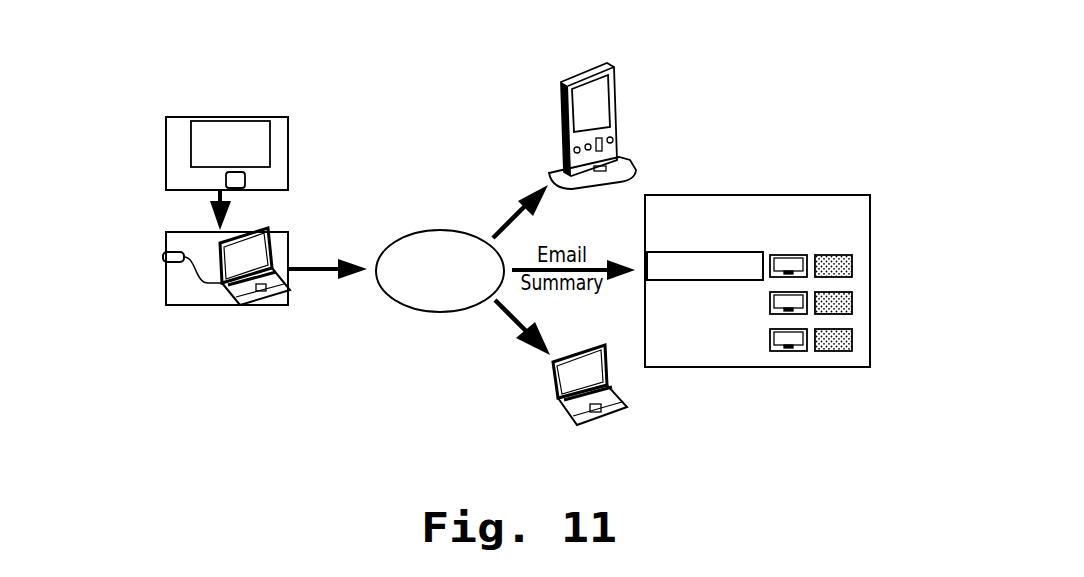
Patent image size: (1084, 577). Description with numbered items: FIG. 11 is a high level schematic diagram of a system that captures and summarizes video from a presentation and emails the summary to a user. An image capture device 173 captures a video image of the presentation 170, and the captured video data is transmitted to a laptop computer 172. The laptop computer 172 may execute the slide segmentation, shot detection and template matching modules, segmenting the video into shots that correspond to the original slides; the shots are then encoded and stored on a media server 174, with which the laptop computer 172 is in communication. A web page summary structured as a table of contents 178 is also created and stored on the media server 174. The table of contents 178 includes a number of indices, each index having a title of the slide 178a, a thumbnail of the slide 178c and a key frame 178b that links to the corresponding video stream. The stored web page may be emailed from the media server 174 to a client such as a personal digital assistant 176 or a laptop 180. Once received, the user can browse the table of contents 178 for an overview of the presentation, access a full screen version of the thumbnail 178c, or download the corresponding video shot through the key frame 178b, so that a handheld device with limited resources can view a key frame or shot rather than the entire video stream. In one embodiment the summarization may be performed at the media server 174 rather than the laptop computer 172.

The presentation 170 is at (218, 116).
The laptop computer 172 is at (240, 305).
The image capture device 173 is at (163, 257).
The media server 174 is at (397, 305).
The personal digital assistant (PDA) 176 is at (618, 90).
The table of contents 178 is at (760, 262).
The title of the slide 178a is at (652, 252).
The key frame 178b is at (805, 254).
The thumbnail of the slide 178c is at (842, 254).
The laptop 180 is at (618, 412).